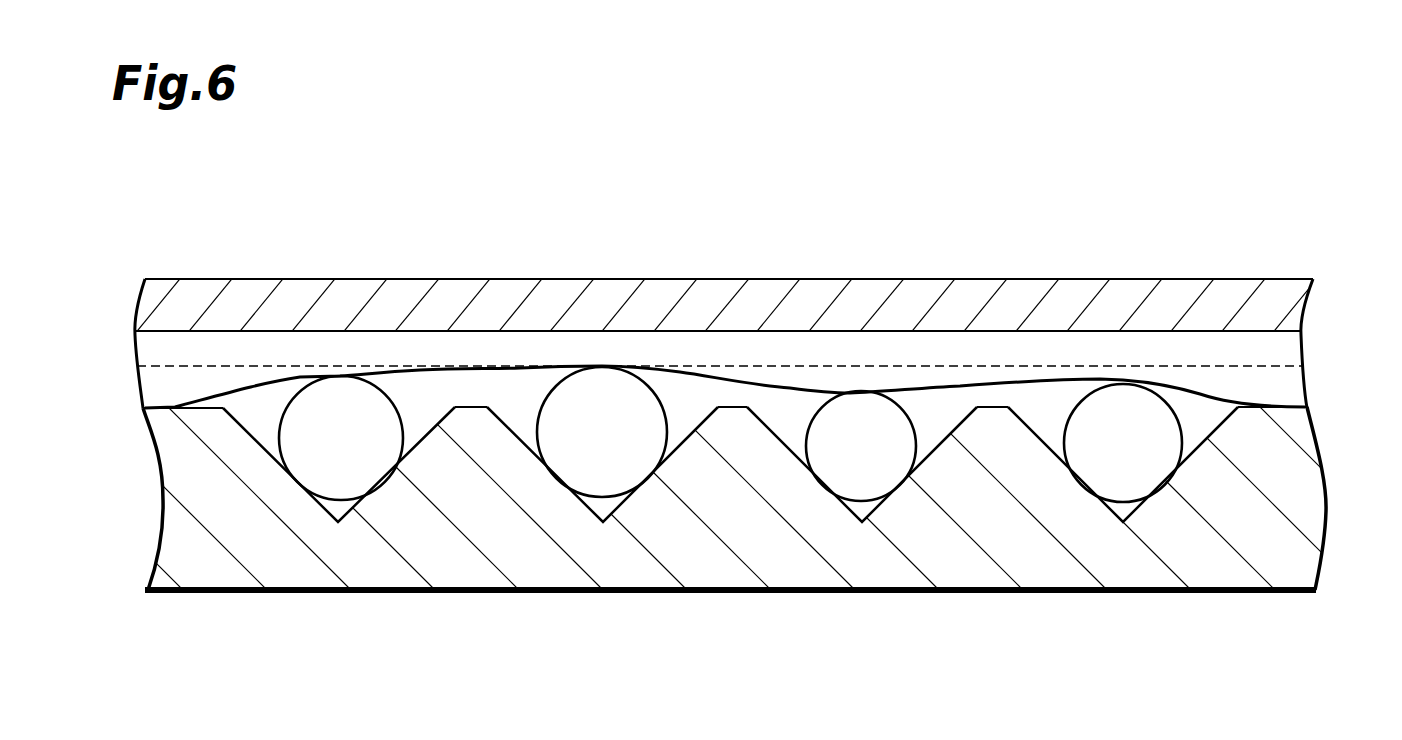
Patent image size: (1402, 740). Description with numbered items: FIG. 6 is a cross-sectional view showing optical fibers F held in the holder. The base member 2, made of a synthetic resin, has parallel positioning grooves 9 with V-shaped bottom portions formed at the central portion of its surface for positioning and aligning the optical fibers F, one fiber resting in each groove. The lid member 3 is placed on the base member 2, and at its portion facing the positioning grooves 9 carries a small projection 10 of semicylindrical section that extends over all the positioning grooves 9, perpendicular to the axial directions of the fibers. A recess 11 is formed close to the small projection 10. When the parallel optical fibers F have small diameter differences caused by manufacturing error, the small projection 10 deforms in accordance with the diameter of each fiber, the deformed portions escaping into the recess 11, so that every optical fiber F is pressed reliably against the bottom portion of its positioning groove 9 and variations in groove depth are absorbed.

The base member 2 is at (1290, 492).
The lid member 3 is at (1190, 295).
The positioning grooves 9 is at (413, 448).
The small projections 10 is at (783, 375).
The recess 11 is at (956, 342).
The optical fibers F is at (333, 463).